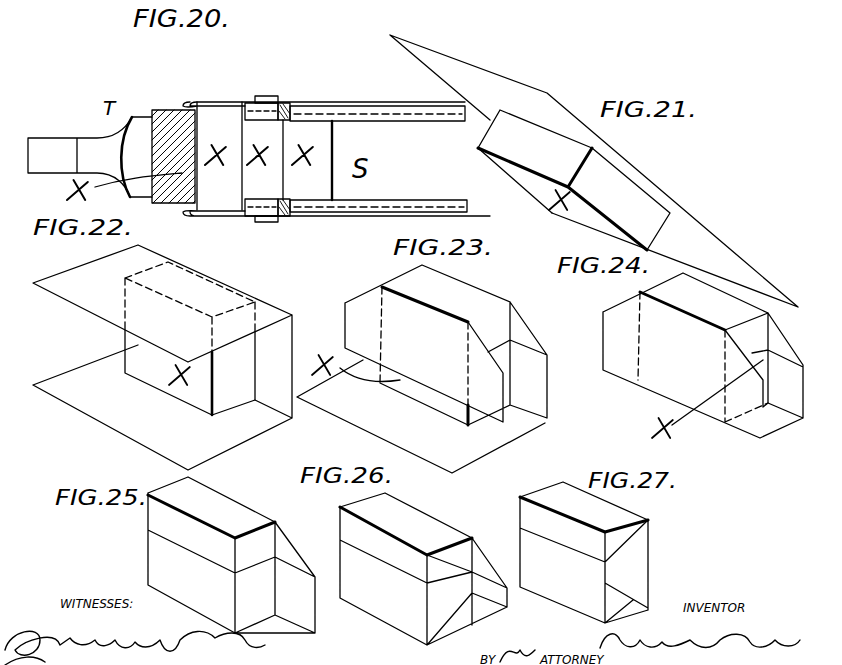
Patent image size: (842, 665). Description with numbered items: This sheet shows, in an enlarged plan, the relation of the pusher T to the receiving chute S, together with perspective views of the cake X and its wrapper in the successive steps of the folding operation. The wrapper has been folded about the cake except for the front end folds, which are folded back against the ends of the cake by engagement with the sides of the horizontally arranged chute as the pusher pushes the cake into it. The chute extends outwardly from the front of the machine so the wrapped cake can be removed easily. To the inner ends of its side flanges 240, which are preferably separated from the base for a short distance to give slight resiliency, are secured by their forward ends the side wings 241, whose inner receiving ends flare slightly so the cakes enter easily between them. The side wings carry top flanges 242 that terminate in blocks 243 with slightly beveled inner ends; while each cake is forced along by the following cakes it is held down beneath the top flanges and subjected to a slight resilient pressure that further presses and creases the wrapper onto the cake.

The side flanges 240 is at (222, 100).
The side wings 241 is at (213, 101).
The top flanges 242 is at (383, 117).
The blocks 243 is at (268, 108).